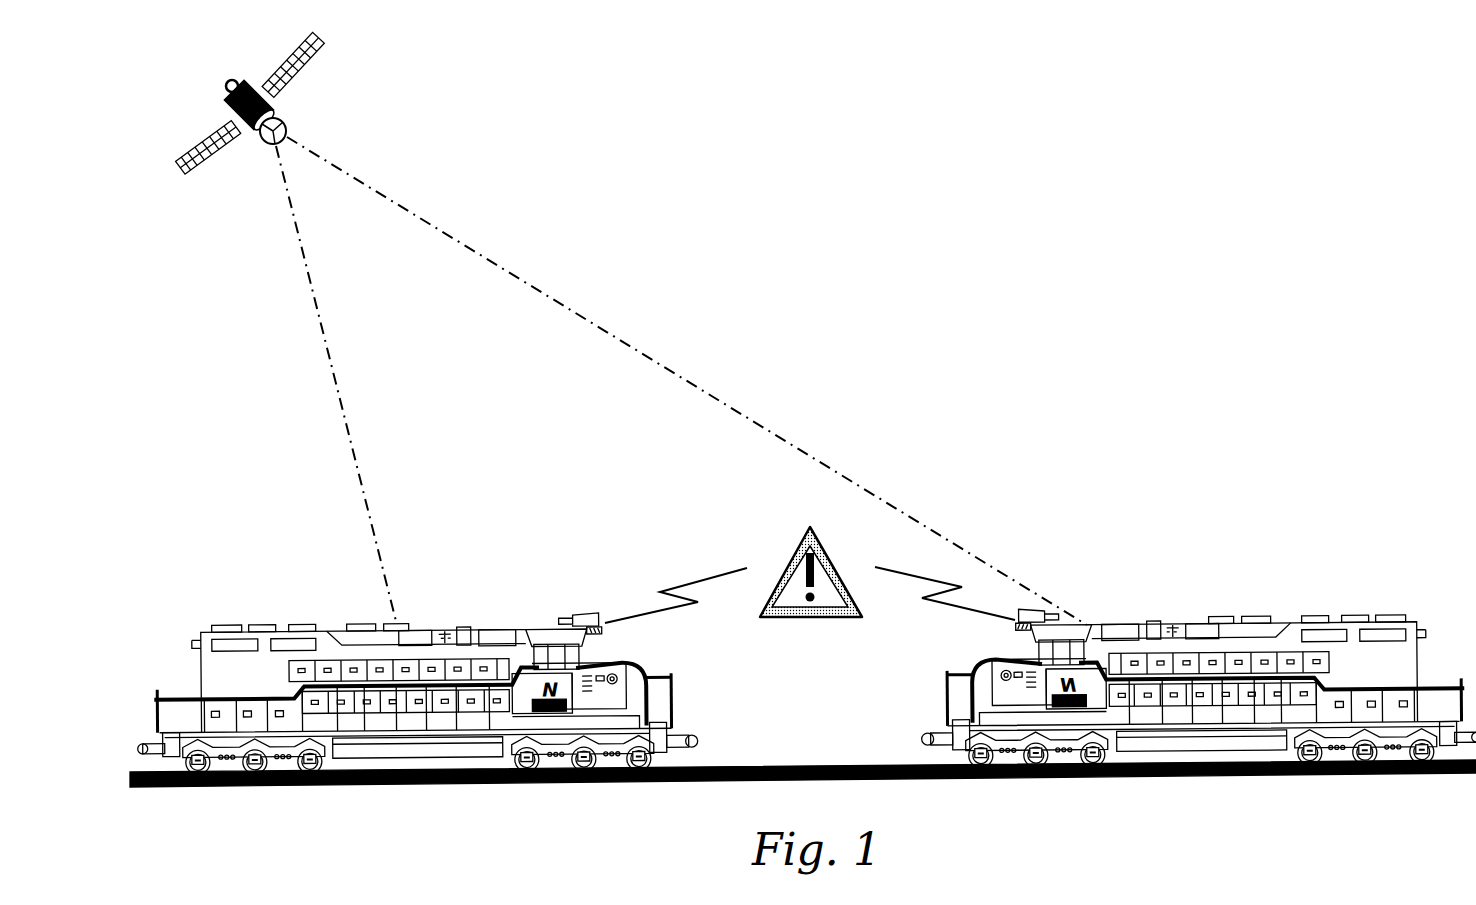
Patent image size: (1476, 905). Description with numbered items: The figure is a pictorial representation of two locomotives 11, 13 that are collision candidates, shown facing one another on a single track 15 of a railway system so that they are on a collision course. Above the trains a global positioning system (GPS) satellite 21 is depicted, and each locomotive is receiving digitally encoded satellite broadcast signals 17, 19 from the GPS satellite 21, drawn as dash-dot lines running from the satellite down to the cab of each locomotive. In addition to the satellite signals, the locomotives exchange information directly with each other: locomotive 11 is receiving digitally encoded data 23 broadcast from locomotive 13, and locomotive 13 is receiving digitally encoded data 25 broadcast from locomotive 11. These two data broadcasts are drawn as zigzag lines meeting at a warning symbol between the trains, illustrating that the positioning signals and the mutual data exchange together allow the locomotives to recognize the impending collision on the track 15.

The locomotive 11 is at (498, 637).
The locomotive 13 is at (1207, 632).
The track 15 is at (799, 770).
The satellite broadcast signal 17 is at (688, 378).
The satellite broadcast signal 19 is at (334, 377).
The global positioning system (GPS) satellite 21 is at (319, 68).
The digitally encoded data 23 is at (895, 572).
The digitally encoded data 25 is at (693, 580).